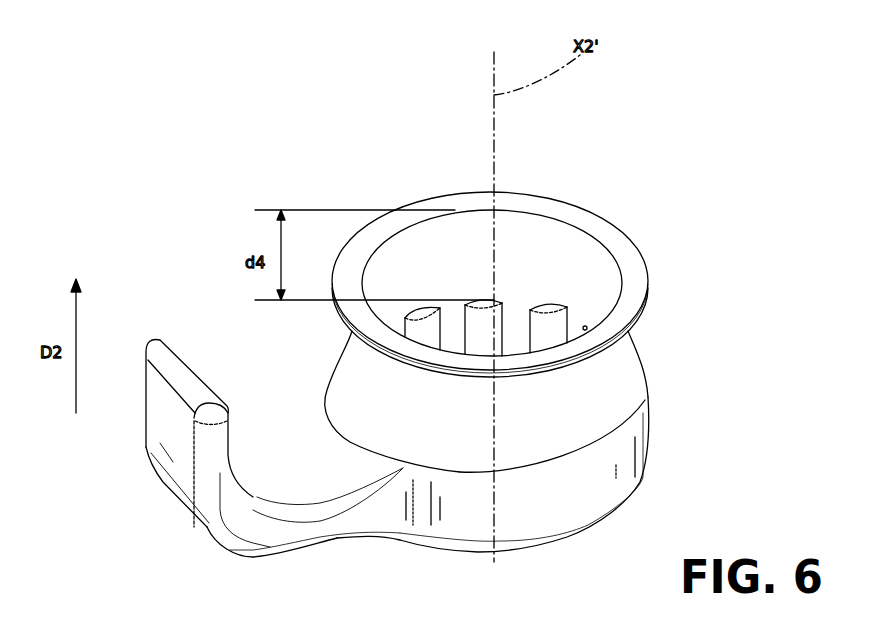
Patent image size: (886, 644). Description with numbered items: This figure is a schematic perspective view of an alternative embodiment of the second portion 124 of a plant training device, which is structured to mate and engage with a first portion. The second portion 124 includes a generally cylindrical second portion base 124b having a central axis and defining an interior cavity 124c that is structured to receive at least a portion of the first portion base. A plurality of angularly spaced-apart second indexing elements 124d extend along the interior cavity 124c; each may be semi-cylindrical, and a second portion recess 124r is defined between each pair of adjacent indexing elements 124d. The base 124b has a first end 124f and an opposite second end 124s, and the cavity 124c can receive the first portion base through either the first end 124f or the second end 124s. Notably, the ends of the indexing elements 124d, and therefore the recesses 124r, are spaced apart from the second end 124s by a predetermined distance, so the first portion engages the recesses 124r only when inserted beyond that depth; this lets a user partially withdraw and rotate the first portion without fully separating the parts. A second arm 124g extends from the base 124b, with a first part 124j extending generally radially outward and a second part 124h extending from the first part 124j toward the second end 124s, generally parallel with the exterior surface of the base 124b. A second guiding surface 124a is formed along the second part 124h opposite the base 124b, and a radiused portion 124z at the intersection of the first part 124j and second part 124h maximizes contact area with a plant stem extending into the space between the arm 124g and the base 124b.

The second portion 124 is at (608, 177).
The second guiding surface 124a is at (194, 366).
The second portion base 124b is at (597, 403).
The interior cavity 124c is at (449, 245).
The second indexing elements 124d is at (549, 308).
The first end 124f is at (478, 552).
The second arm 124g is at (327, 540).
The second part of the second arm 124h is at (168, 425).
The first part of the second arm 124j is at (302, 479).
The second portion recess 124r is at (512, 310).
The second end 124s is at (465, 193).
The radiused portion 124z is at (257, 494).